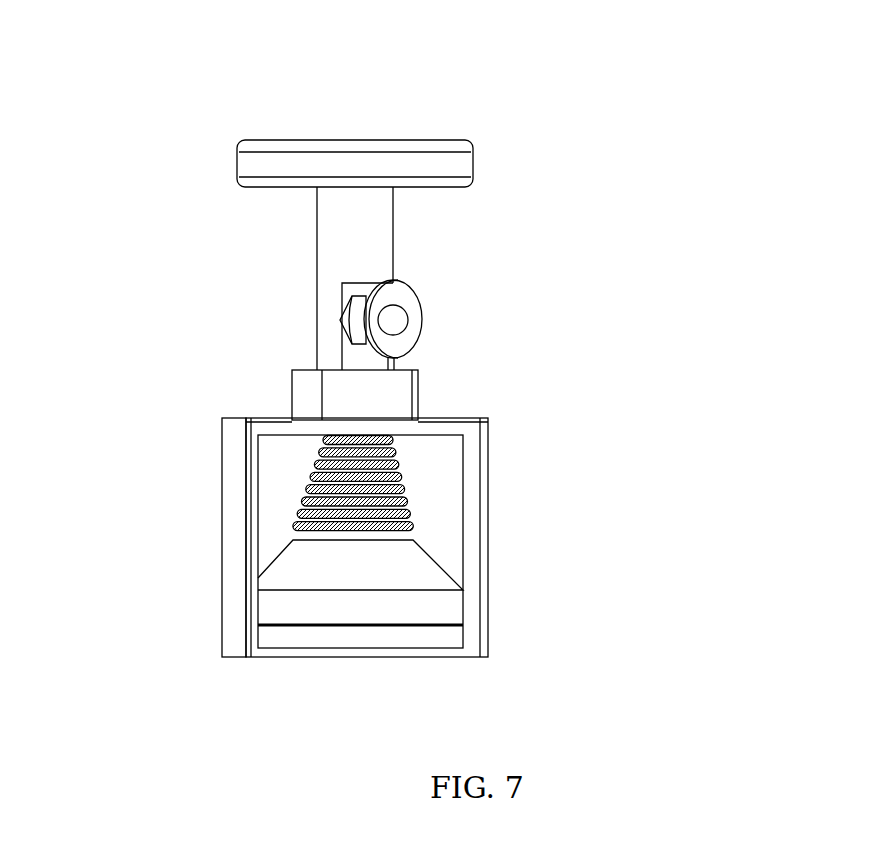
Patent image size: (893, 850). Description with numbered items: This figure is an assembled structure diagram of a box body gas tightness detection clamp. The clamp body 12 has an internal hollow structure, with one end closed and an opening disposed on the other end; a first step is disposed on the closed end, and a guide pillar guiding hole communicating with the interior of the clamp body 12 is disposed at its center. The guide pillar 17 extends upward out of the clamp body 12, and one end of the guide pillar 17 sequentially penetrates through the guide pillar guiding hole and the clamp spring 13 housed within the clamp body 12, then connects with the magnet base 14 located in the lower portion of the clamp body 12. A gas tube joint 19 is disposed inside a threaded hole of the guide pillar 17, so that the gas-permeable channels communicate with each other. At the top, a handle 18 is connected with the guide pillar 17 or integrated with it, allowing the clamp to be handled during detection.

The clamp body 12 is at (486, 512).
The clamp spring 13 is at (522, 517).
The magnet base 14 is at (504, 637).
The guide pillar 17 is at (219, 266).
The handle 18 is at (490, 110).
The gas tube joint 19 is at (542, 275).